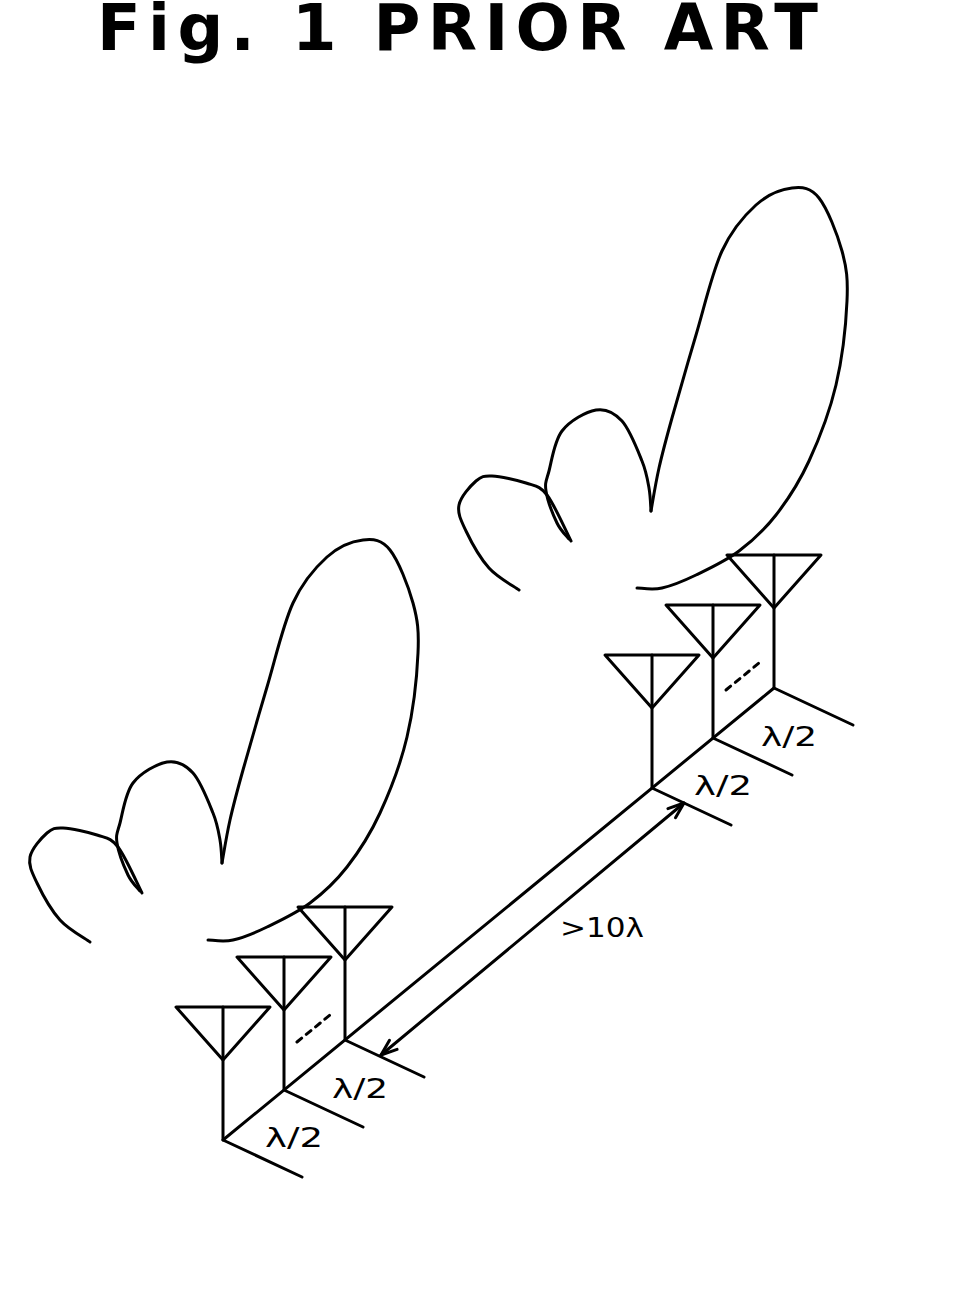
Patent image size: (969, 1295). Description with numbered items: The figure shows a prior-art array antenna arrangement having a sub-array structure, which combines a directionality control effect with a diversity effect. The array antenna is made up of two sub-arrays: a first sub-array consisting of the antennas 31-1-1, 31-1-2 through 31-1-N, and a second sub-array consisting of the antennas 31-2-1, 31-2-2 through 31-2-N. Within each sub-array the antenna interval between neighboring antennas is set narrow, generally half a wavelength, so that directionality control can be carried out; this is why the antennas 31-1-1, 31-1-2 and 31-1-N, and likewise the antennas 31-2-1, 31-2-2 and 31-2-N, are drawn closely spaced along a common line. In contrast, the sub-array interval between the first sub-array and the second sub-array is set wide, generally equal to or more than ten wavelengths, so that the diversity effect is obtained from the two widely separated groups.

The antenna 31-1-1 is at (197, 1007).
The antenna 31-1-2 is at (252, 958).
The antenna 31-1-N is at (347, 907).
The antenna 31-2-1 is at (628, 708).
The antenna 31-2-2 is at (684, 662).
The antenna 31-2-N is at (741, 616).